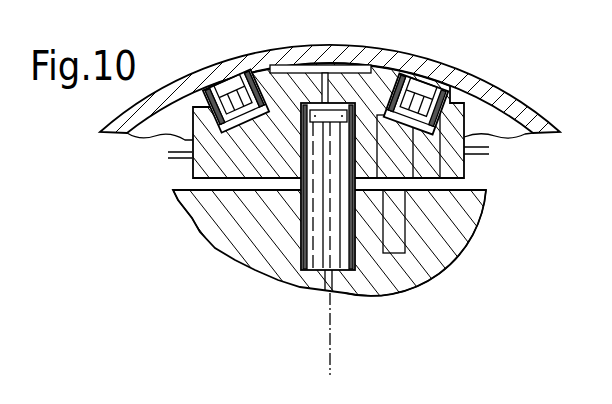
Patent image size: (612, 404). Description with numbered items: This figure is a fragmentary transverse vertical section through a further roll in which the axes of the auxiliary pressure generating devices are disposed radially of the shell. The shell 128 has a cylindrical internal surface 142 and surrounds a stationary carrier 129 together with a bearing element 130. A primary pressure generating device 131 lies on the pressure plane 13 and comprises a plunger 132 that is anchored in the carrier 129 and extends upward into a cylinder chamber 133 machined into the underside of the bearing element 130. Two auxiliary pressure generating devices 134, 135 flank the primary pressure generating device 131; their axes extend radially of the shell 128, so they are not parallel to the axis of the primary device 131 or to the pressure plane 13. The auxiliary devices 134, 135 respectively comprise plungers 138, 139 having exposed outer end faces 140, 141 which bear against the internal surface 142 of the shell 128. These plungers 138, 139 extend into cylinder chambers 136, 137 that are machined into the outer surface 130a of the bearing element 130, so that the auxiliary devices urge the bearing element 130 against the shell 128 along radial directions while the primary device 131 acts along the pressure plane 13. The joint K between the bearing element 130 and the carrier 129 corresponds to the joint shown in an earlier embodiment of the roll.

The shell 128 is at (503, 98).
The stationary carrier 129 is at (444, 235).
The bearing element 130 is at (464, 163).
The outer surface of the bearing element 130a is at (385, 58).
The primary pressure generating device 131 is at (312, 282).
The plunger 132 is at (311, 238).
The cylinder chamber 133 is at (243, 188).
The auxiliary pressure generating device 134 is at (198, 185).
The auxiliary pressure generating device 135 is at (386, 190).
The cylinder chamber 136 is at (240, 143).
The cylinder chamber 137 is at (441, 174).
The plunger 138 is at (215, 98).
The plunger 139 is at (443, 105).
The exposed outer end face 140 is at (254, 94).
The exposed outer end face 141 is at (401, 94).
The cylindrical internal surface 142 is at (128, 136).
The joint K is at (425, 195).
The pressure plane 13 is at (331, 345).